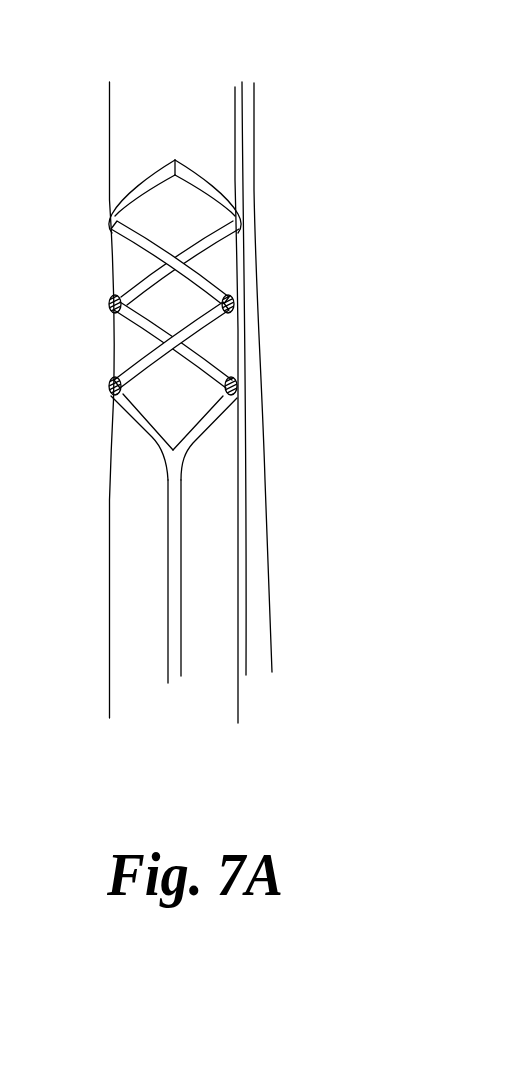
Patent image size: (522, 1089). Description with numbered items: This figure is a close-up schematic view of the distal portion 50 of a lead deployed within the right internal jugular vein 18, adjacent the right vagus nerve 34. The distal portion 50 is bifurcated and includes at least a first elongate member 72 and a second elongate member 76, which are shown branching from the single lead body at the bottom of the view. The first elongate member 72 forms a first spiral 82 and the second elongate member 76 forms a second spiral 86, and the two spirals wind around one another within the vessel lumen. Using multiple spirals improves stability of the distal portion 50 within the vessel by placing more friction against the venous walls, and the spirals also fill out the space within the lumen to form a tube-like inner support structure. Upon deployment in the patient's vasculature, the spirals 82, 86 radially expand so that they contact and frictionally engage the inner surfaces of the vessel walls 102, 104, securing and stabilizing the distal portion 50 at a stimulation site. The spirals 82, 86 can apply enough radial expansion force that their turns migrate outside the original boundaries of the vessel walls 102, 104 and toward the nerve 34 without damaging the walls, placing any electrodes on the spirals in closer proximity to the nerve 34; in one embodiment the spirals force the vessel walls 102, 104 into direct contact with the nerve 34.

The vessel wall 102 is at (110, 107).
The vessel wall 104 is at (235, 107).
The right vagus nerve 34 is at (254, 138).
The first spiral 82 is at (236, 279).
The second spiral 86 is at (110, 322).
The first elongate member 72 is at (142, 423).
The second elongate member 76 is at (208, 423).
The right internal jugular vein 18 is at (122, 598).
The distal portion 50 is at (170, 647).